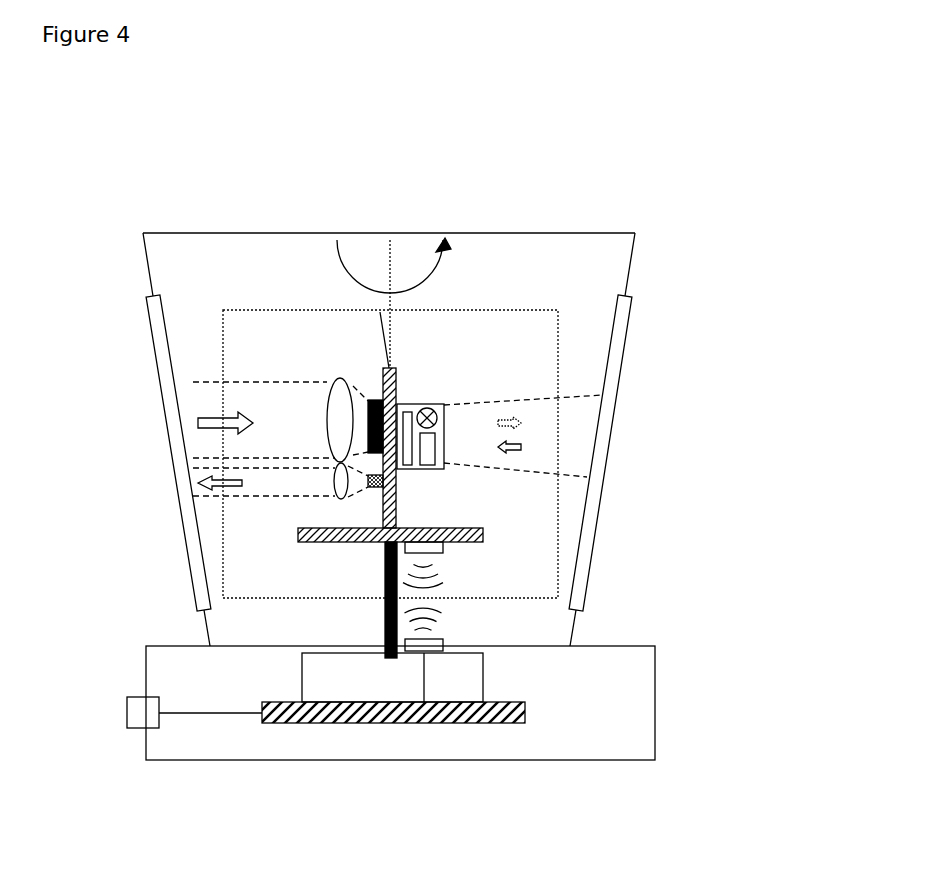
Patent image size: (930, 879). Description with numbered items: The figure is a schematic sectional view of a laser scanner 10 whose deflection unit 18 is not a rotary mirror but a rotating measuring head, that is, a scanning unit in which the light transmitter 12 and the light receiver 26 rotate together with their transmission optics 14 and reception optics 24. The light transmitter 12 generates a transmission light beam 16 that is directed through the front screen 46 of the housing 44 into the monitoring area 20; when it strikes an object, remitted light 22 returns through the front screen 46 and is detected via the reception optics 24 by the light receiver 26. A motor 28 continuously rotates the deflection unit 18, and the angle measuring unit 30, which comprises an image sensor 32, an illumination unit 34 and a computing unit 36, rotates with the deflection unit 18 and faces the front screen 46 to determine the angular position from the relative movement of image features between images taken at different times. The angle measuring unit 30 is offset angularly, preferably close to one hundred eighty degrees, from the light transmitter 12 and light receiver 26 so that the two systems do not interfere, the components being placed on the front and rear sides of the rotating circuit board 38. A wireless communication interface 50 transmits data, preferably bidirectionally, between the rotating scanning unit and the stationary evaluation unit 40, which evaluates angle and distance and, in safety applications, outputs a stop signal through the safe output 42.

The laser scanner 10 is at (458, 201).
The light transmitter 12 is at (441, 617).
The transmission optics 14 is at (300, 497).
The transmission light beam 16 is at (177, 514).
The deflection unit 18 is at (390, 431).
The monitoring area 20 is at (427, 466).
The remitted light 22 is at (174, 417).
The reception optics 24 is at (295, 390).
The light receiver 26 is at (375, 398).
The motor 28 is at (322, 678).
The angle measuring unit 30 is at (420, 408).
The image sensor 32 is at (458, 475).
The illumination unit 34 is at (455, 397).
The computing unit 36 is at (418, 467).
The circuit board 38 is at (379, 313).
The evaluation unit 40 is at (441, 720).
The safe output 42 is at (153, 727).
The housing 44 is at (389, 208).
The front screen 46 is at (400, 461).
The wireless communication interface 50 is at (483, 596).